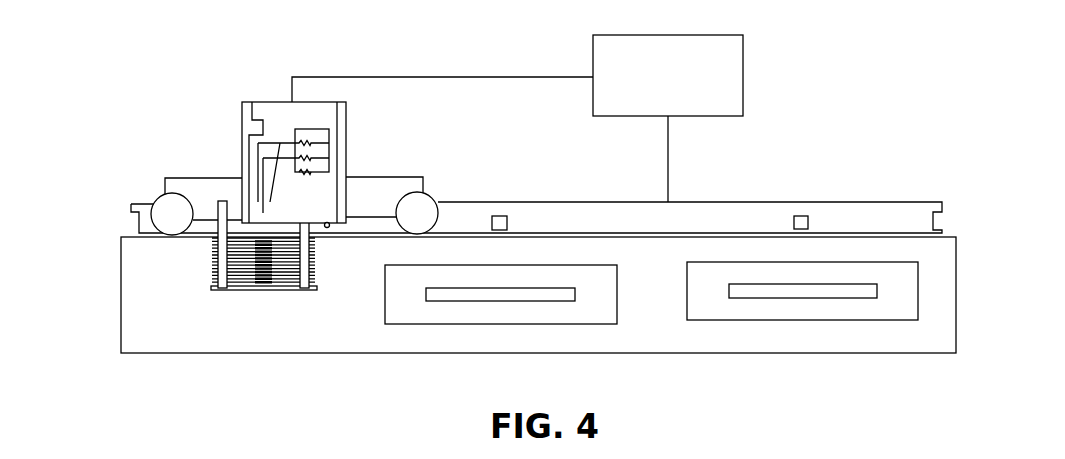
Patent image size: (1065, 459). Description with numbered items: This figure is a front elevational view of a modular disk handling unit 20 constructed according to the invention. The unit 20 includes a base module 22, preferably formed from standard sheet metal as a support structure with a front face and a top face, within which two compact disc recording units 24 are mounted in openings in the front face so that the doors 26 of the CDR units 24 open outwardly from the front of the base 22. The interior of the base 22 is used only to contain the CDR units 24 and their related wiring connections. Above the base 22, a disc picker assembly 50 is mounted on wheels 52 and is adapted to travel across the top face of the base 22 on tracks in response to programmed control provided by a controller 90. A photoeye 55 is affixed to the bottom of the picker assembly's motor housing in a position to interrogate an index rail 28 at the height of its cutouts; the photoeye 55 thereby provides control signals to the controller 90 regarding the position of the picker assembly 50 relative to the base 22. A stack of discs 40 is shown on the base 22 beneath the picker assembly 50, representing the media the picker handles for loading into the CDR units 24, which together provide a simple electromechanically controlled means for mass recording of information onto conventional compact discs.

The modular disk handling unit 20 is at (928, 108).
The base module 22 is at (158, 355).
The compact disc recording unit 24 is at (418, 318).
The door 26 is at (507, 293).
The index rail 28 is at (773, 202).
The stack of sheets 40 is at (207, 261).
The disc picker assembly 50 is at (363, 127).
The wheel 52 is at (165, 218).
The photoeye 55 is at (328, 228).
The controller 90 is at (683, 107).